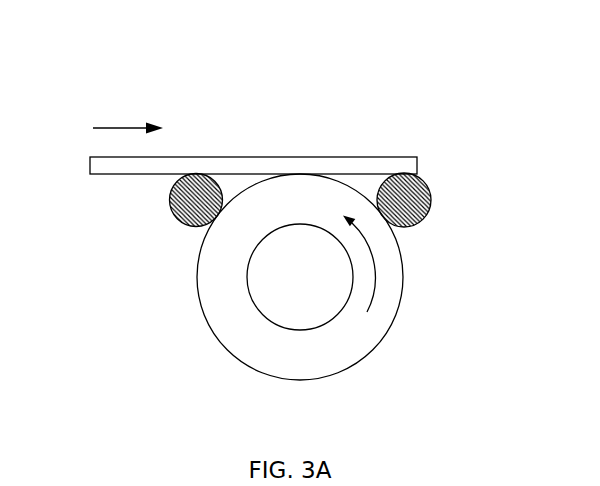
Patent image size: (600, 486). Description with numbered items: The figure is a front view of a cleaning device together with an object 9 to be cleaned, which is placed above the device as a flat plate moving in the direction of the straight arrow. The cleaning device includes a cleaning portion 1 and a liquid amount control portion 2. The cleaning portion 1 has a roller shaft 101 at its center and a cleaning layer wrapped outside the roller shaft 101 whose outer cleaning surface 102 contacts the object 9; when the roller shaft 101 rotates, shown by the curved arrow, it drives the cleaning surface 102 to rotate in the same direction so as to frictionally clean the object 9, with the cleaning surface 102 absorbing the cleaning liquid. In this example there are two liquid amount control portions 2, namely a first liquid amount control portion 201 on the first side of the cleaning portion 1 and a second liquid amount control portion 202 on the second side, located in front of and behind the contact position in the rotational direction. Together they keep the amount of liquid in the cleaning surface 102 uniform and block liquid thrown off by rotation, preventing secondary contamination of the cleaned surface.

The cleaning portion 1 is at (363, 310).
The roller shaft 101 is at (330, 285).
The cleaning surface 102 is at (330, 377).
The liquid amount control portion 2 is at (301, 135).
The first liquid amount control portion 201 is at (409, 185).
The second liquid amount control portion 202 is at (195, 200).
The object to be cleaned 9 is at (210, 165).